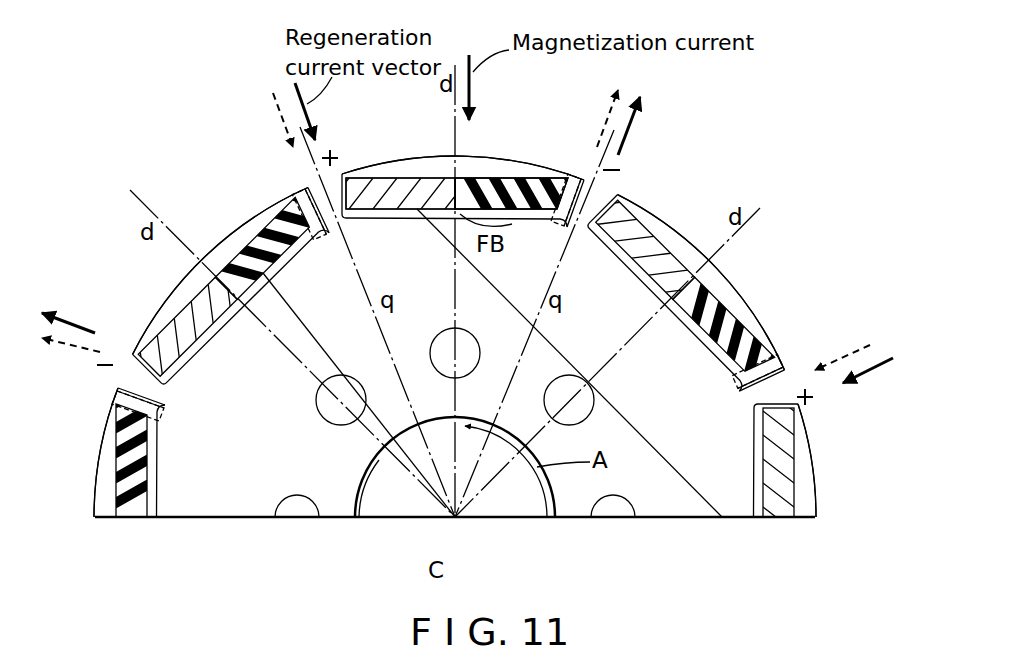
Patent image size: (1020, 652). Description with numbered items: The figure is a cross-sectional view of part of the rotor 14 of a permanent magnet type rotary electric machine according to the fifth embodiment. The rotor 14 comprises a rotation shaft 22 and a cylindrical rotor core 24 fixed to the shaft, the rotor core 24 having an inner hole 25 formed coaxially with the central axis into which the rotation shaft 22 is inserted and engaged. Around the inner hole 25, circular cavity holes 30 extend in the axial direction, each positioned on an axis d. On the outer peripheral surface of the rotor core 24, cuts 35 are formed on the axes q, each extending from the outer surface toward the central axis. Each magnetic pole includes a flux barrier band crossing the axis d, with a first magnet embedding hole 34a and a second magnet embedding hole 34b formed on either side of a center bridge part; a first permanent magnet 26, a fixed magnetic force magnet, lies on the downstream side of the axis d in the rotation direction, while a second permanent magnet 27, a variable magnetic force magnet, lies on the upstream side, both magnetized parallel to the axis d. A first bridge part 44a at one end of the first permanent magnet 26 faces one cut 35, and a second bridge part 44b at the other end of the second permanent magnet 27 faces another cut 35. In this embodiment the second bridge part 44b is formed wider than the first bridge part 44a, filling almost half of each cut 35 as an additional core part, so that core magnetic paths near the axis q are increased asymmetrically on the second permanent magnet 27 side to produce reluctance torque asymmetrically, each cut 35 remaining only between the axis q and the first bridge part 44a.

The rotor 14 is at (784, 282).
The rotation shaft 22 is at (518, 505).
The rotor core 24 is at (697, 497).
The inner hole 25 is at (372, 507).
The first permanent magnet 26 is at (408, 210).
The second permanent magnet 27 is at (530, 203).
The cavity hole 30 is at (330, 414).
The first magnet embedding hole 34a is at (412, 179).
The second magnet embedding hole 34b is at (520, 180).
The cut 35 is at (604, 196).
The first bridge part 44a is at (347, 172).
The second bridge part 44b is at (310, 185).